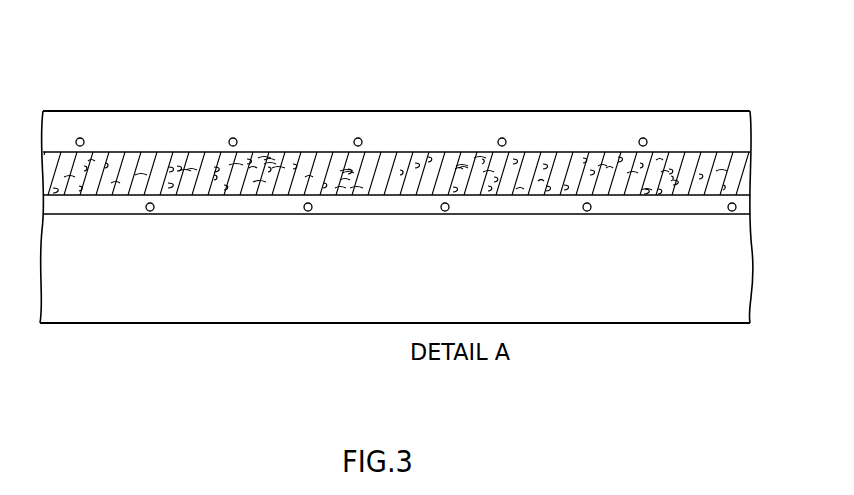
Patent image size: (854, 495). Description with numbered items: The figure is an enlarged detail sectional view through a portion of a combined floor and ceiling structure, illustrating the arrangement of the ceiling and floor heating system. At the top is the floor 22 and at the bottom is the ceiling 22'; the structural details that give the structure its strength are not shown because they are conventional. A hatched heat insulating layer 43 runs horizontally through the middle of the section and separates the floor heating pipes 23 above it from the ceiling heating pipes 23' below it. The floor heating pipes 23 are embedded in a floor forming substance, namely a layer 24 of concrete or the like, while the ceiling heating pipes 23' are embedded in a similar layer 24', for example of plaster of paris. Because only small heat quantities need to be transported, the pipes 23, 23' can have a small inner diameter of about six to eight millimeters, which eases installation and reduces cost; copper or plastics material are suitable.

The floor 22 is at (396, 89).
The floor heating pipes 23 is at (361, 107).
The layer of concrete 24 is at (396, 110).
The heat insulating layer 43 is at (393, 186).
The ceiling heating pipes 23' is at (438, 230).
The layer of plaster of paris 24' is at (396, 232).
The ceiling 22' is at (396, 240).